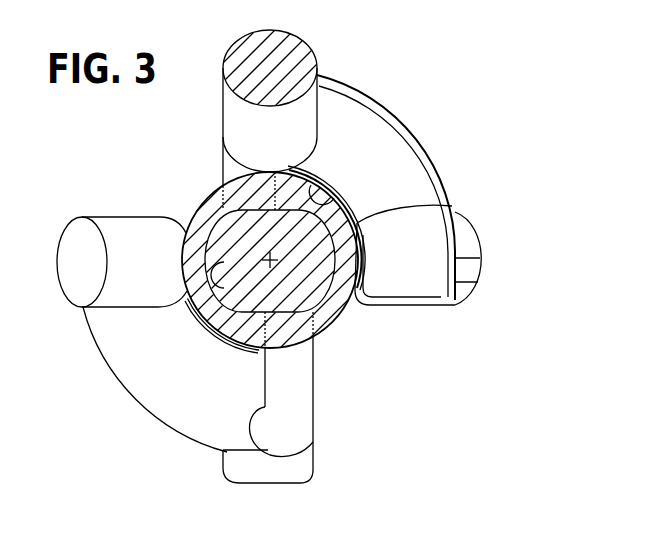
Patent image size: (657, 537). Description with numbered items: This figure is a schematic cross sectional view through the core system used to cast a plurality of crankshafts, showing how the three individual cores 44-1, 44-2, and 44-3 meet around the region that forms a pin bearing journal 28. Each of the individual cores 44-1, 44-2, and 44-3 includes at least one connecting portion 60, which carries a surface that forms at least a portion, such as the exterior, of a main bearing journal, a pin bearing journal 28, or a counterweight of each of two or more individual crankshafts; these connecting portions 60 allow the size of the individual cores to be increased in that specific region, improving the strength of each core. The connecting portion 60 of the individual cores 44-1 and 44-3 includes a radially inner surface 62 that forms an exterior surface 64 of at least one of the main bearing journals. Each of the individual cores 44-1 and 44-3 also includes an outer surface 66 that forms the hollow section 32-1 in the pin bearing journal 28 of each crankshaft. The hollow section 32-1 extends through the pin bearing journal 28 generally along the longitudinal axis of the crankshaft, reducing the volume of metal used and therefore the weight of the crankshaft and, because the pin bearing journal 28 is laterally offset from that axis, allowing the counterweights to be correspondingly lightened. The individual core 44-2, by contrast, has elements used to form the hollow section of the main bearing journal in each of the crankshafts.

The pin bearing journal 28 is at (198, 203).
The connecting portion 60 is at (350, 110).
The radially inner surface 62 is at (333, 203).
The individual core 44-1 is at (430, 187).
The individual core 44-3 is at (441, 147).
The individual core 44-2 is at (338, 295).
The exterior surface 64 is at (452, 206).
The hollow section 32-1 is at (240, 286).
The outer surface 66 is at (258, 315).